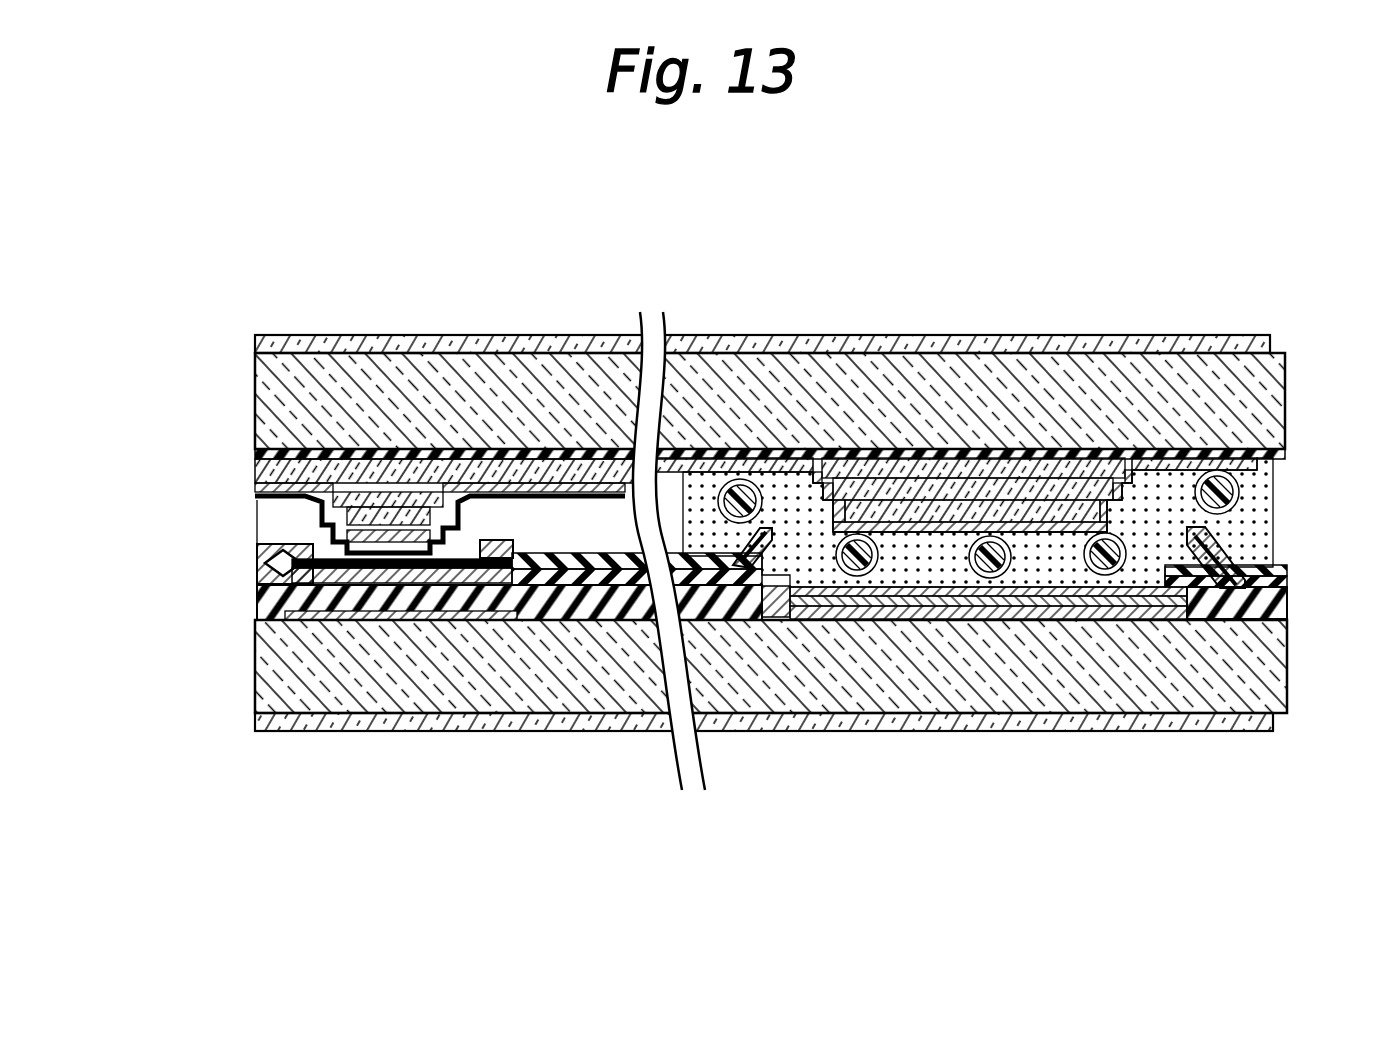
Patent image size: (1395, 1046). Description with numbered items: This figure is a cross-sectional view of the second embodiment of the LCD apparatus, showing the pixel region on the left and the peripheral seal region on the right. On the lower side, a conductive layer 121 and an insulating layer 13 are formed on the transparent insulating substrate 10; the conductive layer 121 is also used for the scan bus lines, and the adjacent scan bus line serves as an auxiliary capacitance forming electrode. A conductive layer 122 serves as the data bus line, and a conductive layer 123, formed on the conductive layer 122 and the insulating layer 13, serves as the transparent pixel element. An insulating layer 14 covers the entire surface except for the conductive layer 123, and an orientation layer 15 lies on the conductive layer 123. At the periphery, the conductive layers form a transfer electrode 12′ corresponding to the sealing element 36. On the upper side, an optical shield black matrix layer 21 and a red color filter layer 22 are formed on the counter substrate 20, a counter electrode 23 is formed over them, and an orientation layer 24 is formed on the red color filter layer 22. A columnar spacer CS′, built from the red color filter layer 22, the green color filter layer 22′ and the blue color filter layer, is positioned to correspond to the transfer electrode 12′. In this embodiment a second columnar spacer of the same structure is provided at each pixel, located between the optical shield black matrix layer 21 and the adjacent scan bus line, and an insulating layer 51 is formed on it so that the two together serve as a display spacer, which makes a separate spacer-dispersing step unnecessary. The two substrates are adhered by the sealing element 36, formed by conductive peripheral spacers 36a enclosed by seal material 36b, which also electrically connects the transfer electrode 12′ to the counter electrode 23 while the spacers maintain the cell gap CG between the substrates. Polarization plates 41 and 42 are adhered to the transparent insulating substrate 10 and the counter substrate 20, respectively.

The transparent insulating substrate 10 is at (1283, 658).
The insulating layer 13 is at (1275, 606).
The insulating layer 14 is at (1275, 580).
The orientation layer 15 is at (258, 548).
The counter substrate 20 is at (1262, 384).
The optical shield black matrix layer 21 is at (582, 453).
The red color filter layer 22 is at (420, 475).
The green color filter layer 22′ is at (385, 495).
The counter electrode 23 is at (258, 490).
The orientation layer 24 is at (258, 511).
The sealing element 36 is at (1283, 457).
The conductive peripheral spacers 36a is at (1147, 488).
The seal material 36b is at (740, 490).
The polarization plate 41 is at (1235, 733).
The polarization plate 42 is at (1258, 336).
The insulating layer 51 is at (395, 560).
The conductive layer 121 is at (1048, 593).
The conductive layer 122 is at (998, 603).
The conductive layer 123 is at (900, 612).
The transfer electrode 12′ is at (1087, 803).
The columnar spacer CS′ is at (1070, 232).
The cell gap CG is at (288, 525).